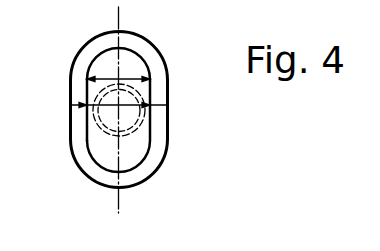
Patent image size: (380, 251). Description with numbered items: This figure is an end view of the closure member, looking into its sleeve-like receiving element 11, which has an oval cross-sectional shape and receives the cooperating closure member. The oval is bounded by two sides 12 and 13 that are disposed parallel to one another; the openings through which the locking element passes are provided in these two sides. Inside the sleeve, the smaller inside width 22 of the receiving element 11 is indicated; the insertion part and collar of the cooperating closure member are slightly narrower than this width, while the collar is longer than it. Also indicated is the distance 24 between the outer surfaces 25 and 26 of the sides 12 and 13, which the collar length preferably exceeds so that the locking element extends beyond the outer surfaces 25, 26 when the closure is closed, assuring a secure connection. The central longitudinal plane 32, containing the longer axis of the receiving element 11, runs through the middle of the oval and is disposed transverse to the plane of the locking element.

The receiving element 11 is at (151, 89).
The side 12 is at (167, 104).
The side 13 is at (79, 137).
The smaller inside width 22 is at (121, 78).
The distance between outer surfaces 24 is at (91, 113).
The outer surface 25 is at (167, 138).
The outer surface 26 is at (70, 78).
The central longitudinal plane 32 is at (117, 200).